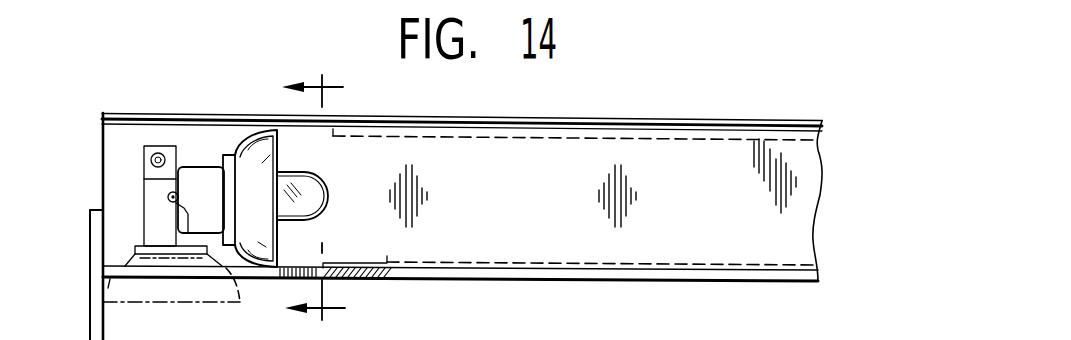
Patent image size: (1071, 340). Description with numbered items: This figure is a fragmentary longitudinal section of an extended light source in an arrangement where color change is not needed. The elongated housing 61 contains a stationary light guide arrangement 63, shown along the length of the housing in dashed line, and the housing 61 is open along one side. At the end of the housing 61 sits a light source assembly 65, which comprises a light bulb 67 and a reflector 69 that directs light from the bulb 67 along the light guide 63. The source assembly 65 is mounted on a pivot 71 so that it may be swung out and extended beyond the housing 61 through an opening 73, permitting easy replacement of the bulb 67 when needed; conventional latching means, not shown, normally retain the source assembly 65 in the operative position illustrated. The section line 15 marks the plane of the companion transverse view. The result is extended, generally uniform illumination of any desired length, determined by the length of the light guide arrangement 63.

The section line 15- 15 is at (328, 200).
The housing 61 is at (543, 118).
The light guide arrangement 63 is at (717, 140).
The light source assembly 65 is at (216, 173).
The light bulb 67 is at (319, 190).
The reflector 69 is at (264, 163).
The pivot 71 is at (167, 198).
The opening 73 is at (314, 278).